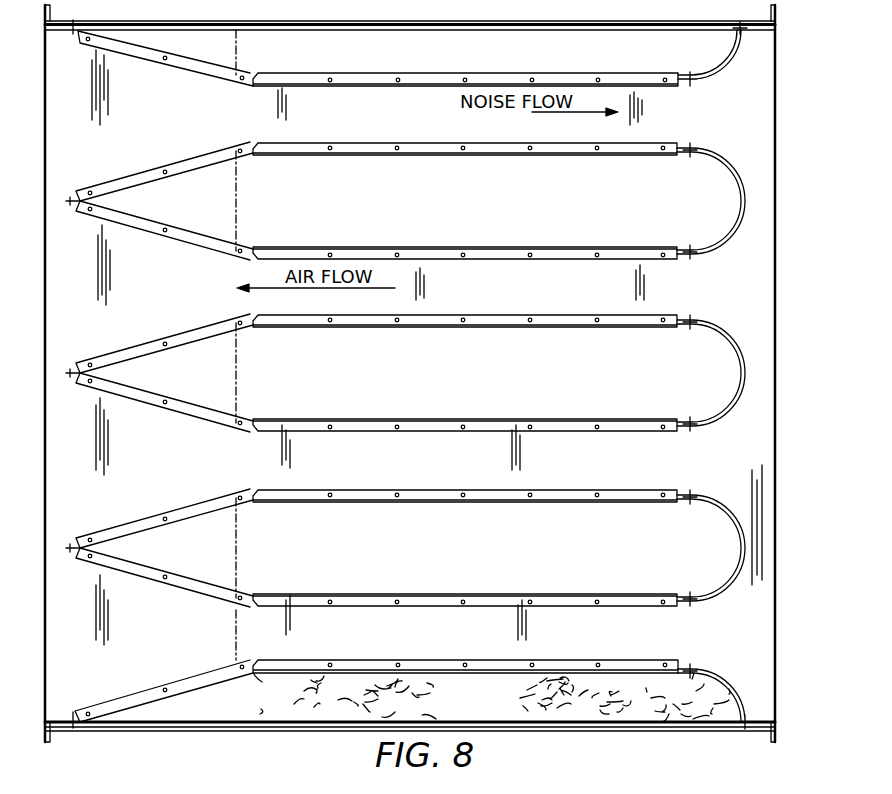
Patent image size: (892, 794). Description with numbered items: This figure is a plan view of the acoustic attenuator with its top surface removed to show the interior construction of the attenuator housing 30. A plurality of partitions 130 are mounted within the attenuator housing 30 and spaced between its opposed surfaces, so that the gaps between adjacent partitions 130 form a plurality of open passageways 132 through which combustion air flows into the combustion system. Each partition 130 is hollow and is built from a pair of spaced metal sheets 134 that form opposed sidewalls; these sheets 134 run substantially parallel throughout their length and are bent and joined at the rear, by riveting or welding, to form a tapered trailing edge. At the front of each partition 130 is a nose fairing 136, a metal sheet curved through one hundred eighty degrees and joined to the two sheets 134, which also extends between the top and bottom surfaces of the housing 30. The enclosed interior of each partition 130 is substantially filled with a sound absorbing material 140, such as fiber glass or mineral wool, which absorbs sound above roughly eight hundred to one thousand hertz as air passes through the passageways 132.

The acoustic attenuator housing 30 is at (665, 22).
The partitions 130 is at (172, 66).
The open passageways 132 is at (378, 130).
The spaced metal sheets 134 is at (342, 73).
The nose fairing 136 is at (727, 65).
The sound absorbing material 140 is at (512, 62).